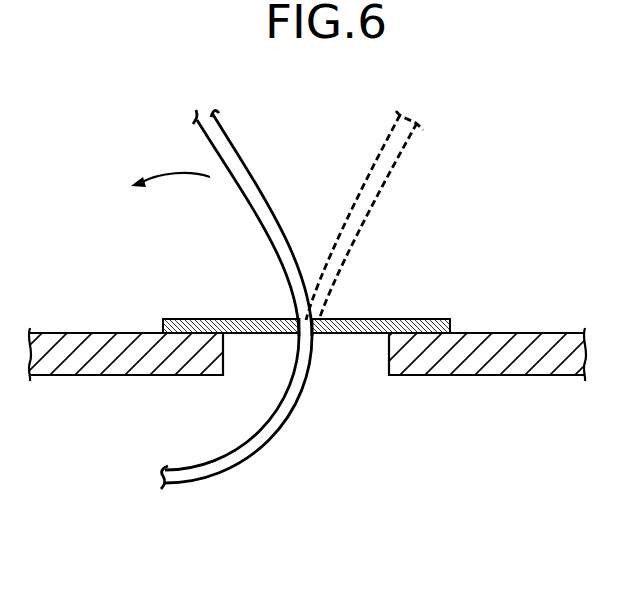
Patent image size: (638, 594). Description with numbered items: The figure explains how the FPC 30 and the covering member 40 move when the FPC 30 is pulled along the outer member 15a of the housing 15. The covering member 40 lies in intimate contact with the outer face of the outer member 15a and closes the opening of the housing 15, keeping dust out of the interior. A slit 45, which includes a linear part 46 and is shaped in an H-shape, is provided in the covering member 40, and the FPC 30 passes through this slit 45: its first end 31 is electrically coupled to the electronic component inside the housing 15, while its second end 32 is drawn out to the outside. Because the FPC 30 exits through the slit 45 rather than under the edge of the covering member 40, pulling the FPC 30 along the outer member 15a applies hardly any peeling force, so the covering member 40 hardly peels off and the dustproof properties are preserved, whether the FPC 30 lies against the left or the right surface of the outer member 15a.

The housing 15 is at (68, 356).
The outer member 15a is at (536, 355).
The FPC 30 is at (319, 332).
The first end 31 is at (223, 482).
The second end 32 is at (226, 136).
The covering member 40 is at (203, 329).
The slit 45 is at (365, 376).
The linear part 46 is at (322, 340).